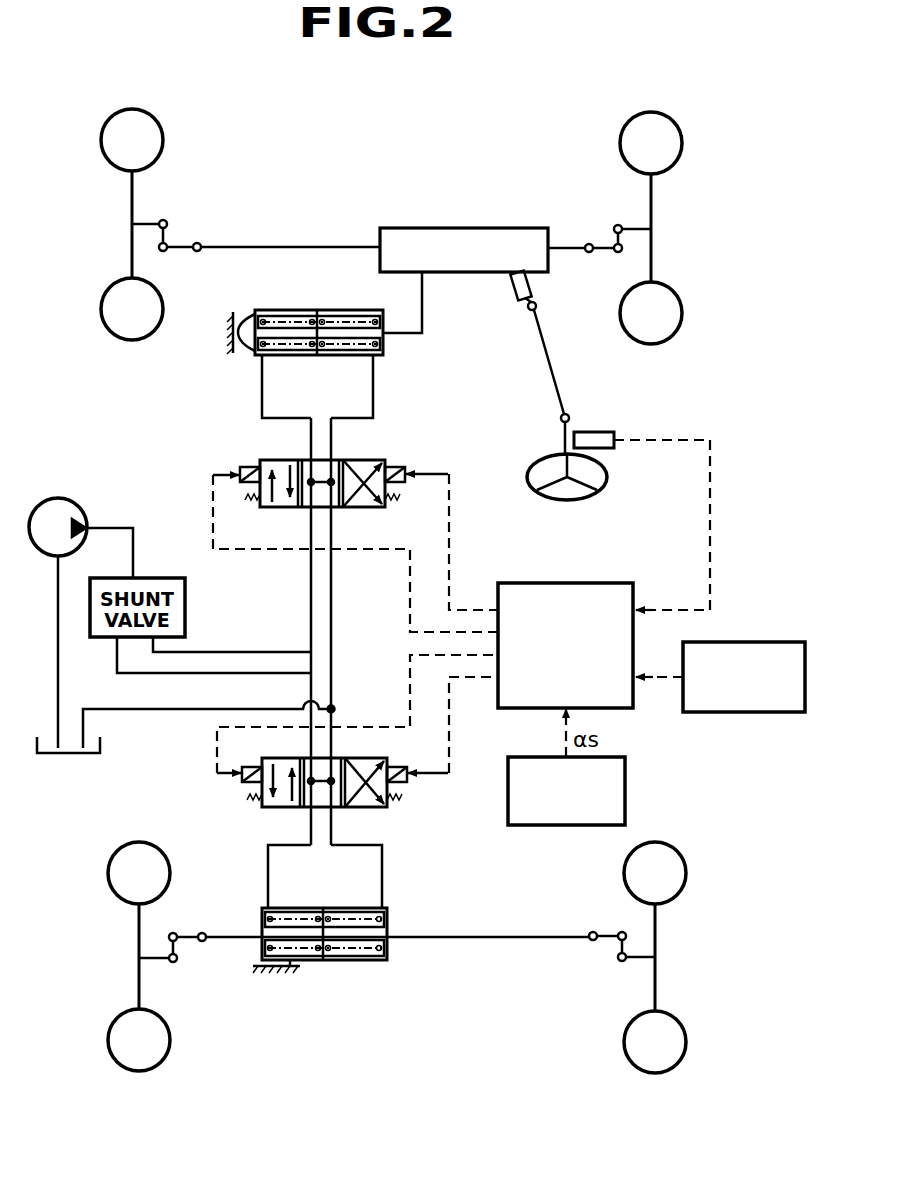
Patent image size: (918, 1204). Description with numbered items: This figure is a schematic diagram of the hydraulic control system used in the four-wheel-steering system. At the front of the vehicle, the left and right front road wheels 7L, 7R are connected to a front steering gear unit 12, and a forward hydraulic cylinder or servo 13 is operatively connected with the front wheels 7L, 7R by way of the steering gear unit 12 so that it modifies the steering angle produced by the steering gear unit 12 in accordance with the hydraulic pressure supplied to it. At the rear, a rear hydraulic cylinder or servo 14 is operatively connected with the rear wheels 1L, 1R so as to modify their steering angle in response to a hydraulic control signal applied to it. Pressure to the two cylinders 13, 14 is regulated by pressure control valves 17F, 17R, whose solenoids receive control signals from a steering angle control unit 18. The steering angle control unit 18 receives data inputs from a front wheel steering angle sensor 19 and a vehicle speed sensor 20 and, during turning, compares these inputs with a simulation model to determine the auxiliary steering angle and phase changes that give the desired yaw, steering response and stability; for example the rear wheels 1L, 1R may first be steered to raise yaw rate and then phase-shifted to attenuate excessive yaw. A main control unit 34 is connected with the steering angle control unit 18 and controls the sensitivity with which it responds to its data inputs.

The front road wheel 7L is at (162, 150).
The front road wheel 7R is at (621, 130).
The front steering gear unit 12 is at (470, 228).
The forward hydraulic cylinder 13 is at (318, 311).
The pressure control valve 17F is at (383, 460).
The pressure control valve 17R is at (387, 807).
The steering angle control unit 18 is at (558, 583).
The front wheel steering angle sensor 19 is at (585, 432).
The vehicle speed sensor 20 is at (729, 642).
The main control unit 34 is at (625, 798).
The rear hydraulic cylinder 14 is at (387, 960).
The rear wheel 1L is at (168, 1026).
The rear wheel 1R is at (626, 1032).